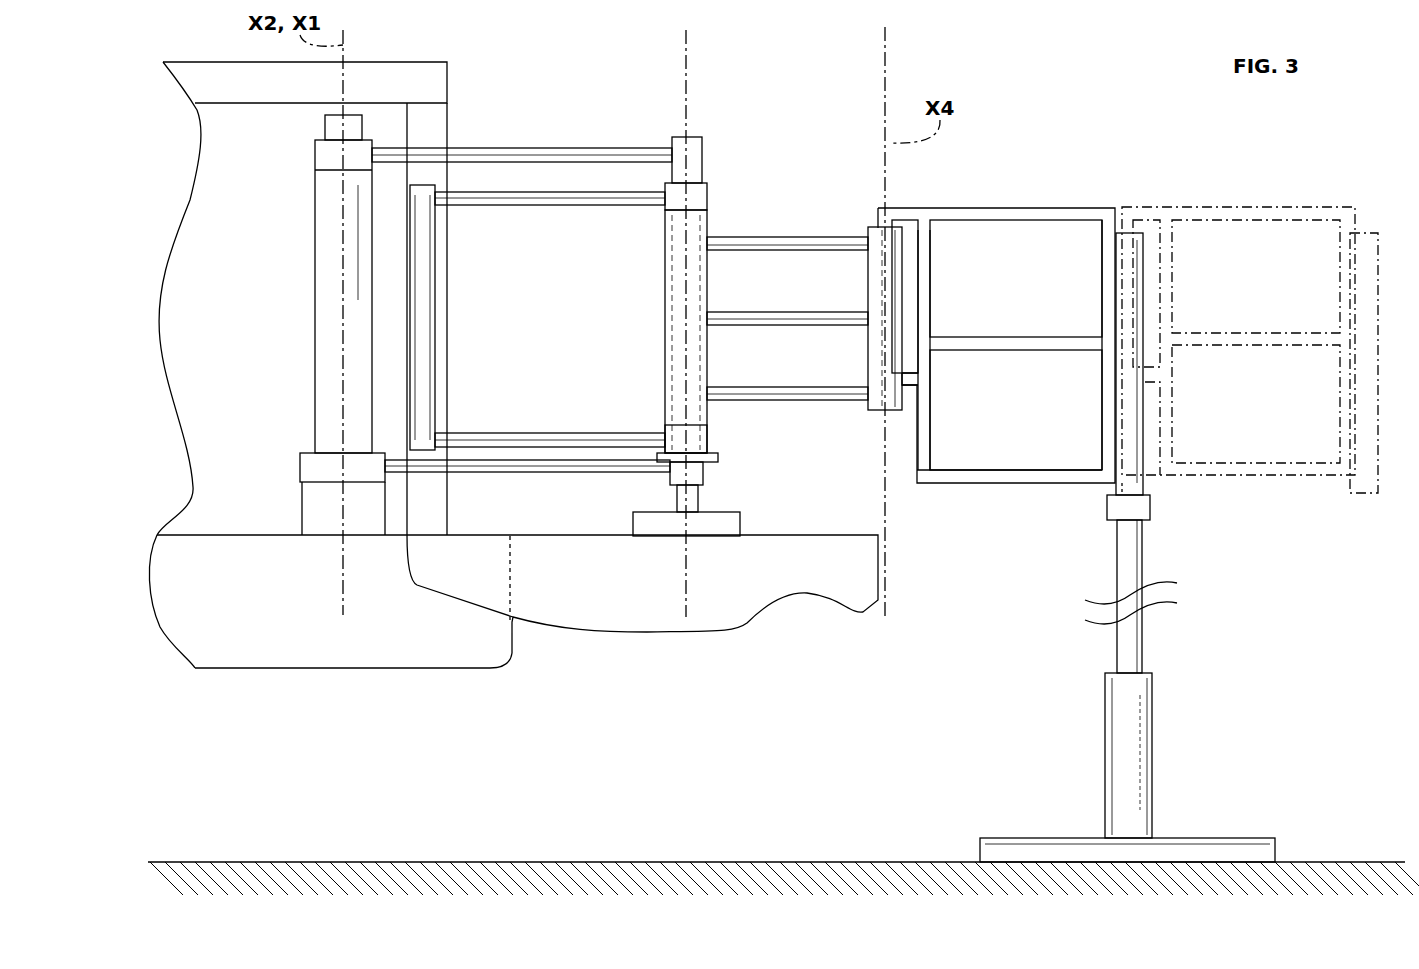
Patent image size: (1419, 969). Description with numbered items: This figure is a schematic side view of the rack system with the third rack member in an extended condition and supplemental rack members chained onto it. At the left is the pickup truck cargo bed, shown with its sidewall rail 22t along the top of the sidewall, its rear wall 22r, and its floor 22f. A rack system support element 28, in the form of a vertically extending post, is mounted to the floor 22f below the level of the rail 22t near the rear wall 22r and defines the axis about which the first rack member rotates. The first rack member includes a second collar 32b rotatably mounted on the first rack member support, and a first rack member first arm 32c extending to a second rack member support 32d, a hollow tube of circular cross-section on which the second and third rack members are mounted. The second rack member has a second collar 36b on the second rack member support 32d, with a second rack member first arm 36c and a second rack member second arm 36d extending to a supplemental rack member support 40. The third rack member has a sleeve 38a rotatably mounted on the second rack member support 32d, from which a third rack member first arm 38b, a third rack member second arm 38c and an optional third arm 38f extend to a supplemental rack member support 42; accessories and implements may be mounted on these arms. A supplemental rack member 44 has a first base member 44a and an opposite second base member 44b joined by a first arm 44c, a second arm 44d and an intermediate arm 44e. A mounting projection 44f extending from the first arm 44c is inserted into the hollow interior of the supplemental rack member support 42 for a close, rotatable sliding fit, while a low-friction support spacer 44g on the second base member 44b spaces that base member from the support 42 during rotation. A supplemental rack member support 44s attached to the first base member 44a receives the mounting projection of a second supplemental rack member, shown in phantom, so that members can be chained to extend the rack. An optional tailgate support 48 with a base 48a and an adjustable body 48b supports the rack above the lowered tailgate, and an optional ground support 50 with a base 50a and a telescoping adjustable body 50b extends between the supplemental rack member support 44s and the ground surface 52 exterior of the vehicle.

The sidewall rail 22t is at (247, 80).
The rear wall 22r is at (430, 135).
The floor 22f is at (280, 537).
The rack system support element 28 is at (330, 125).
The first rack member first arm 32c is at (570, 148).
The second rack member support 32d is at (672, 160).
The second collar 32b is at (318, 470).
The second rack member first arm 36c is at (535, 200).
The second rack member second arm 36d is at (512, 440).
The second collar 36b is at (680, 437).
The sleeve 38a is at (680, 272).
The third rack member first arm 38b is at (808, 243).
The third arm 38f is at (806, 318).
The third rack member second arm 38c is at (785, 395).
The supplemental rack member support 40 is at (420, 350).
The supplemental rack member support 42 is at (872, 402).
The supplemental rack member 44 is at (1098, 383).
The first base member 44a is at (1102, 440).
The second base member 44b is at (930, 435).
The first arm 44c is at (1035, 215).
The second arm 44d is at (1000, 477).
The intermediate arm 44e is at (1032, 345).
The mounting projection 44f is at (875, 218).
The support spacer 44g is at (905, 400).
The supplemental rack member support 44s is at (1140, 485).
The tailgate support 48 is at (694, 584).
The base 48a is at (712, 525).
The adjustable body 48b is at (678, 495).
The ground support 50 is at (1168, 806).
The base 50a is at (1150, 850).
The adjustable body 50b is at (1137, 733).
The ground surface 52 is at (628, 860).